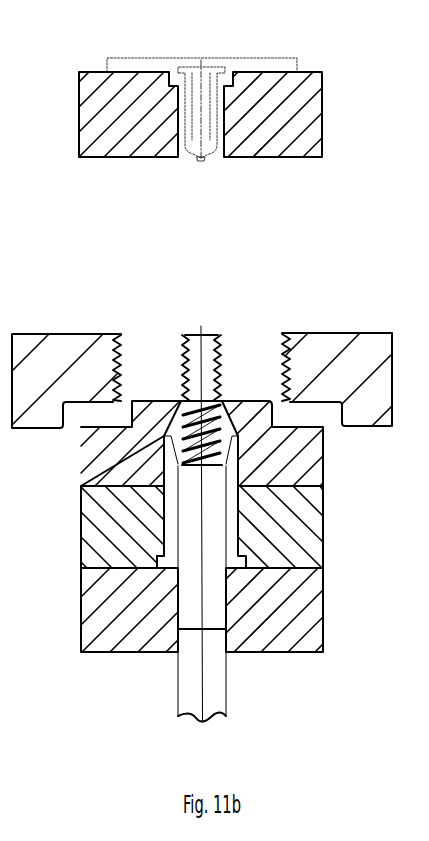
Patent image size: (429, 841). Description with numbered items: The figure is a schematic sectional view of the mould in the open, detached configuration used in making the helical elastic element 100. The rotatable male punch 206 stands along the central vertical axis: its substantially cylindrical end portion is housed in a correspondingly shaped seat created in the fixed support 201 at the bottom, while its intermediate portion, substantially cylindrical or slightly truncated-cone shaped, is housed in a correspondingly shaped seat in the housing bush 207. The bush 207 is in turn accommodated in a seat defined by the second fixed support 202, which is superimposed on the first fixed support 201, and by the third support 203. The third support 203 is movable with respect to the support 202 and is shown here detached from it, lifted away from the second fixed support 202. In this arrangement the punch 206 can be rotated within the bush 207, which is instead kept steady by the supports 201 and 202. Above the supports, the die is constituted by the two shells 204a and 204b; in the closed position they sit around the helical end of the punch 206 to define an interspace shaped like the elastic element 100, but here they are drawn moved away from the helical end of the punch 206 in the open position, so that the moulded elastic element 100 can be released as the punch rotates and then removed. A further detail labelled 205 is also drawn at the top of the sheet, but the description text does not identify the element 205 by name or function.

The elastic element 100 is at (233, 327).
The fixed support 201 is at (302, 630).
The second fixed support 202 is at (302, 532).
The third support 203 is at (299, 450).
The shell 204a is at (68, 348).
The shell 204b is at (338, 345).
The cap block 205 is at (300, 132).
The rotatable male punch 206 is at (187, 678).
The housing bush 207 is at (160, 552).